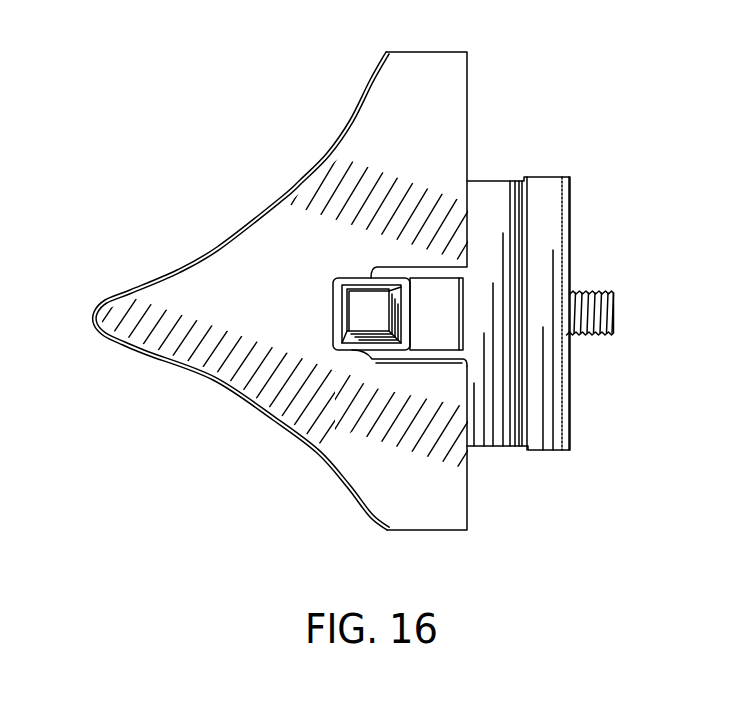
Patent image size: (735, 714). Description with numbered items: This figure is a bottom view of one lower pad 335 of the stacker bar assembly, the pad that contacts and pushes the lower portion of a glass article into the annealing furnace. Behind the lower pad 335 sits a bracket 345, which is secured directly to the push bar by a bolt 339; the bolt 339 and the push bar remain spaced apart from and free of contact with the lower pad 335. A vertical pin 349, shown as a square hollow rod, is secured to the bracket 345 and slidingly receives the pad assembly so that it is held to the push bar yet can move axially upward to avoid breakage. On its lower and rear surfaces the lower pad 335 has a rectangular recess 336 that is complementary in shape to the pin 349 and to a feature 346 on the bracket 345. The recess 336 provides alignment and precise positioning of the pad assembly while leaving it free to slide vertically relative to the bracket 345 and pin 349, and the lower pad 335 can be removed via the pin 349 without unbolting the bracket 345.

The lower pad 335 is at (243, 258).
The recess 336 is at (369, 360).
The bolt 339 is at (616, 304).
The bracket 345 is at (548, 198).
The feature 346 is at (463, 338).
The vertical pin 349 is at (340, 323).